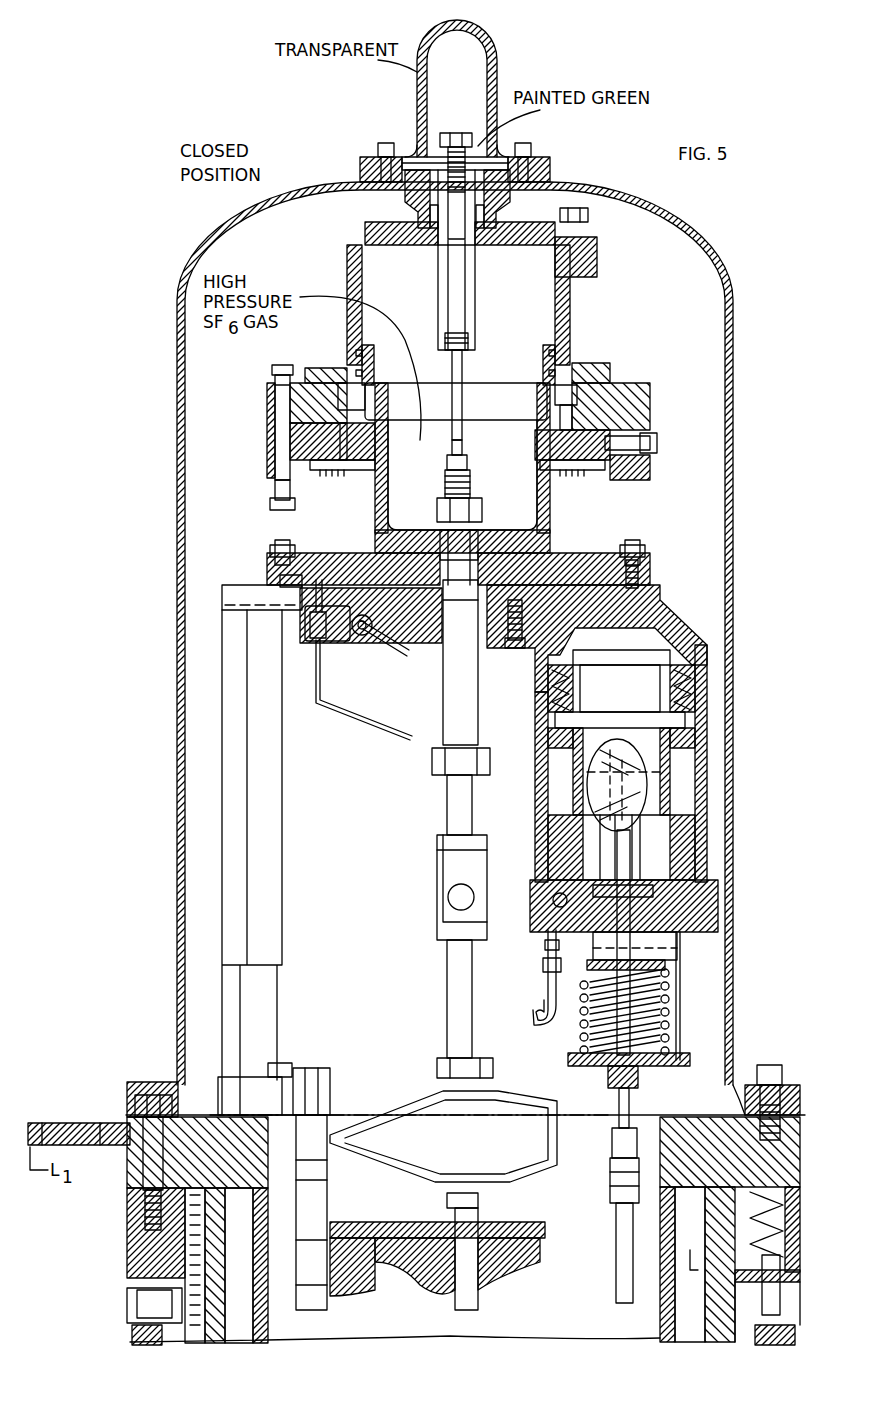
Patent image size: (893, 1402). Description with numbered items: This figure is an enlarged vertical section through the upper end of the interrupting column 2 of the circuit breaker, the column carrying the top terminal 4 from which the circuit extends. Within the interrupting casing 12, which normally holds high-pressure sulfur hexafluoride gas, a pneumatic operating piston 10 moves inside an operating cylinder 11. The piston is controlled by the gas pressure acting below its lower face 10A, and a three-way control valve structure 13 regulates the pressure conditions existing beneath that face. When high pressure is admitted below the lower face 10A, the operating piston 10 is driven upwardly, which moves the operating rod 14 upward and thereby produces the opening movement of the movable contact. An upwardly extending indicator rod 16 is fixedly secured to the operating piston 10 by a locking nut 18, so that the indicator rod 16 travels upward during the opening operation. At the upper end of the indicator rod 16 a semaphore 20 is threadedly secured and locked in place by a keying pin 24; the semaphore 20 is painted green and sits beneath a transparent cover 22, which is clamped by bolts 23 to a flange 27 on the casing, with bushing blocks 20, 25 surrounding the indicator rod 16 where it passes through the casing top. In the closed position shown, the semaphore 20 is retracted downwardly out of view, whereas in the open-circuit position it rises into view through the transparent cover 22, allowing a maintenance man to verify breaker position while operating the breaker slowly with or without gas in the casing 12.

The interrupting column 2 is at (805, 1340).
The top terminal 4 is at (68, 1123).
The operating piston 10 is at (385, 477).
The lower face 10A is at (393, 533).
The operating cylinder 11 is at (546, 358).
The interrupting casing 12 is at (690, 1250).
The three-way control valve structure 13 is at (682, 780).
The operating rod 14 is at (444, 805).
The indicator rod 16 is at (455, 288).
The locking nut 18 is at (477, 515).
The semaphore 20 is at (433, 187).
The transparent cover 22 is at (417, 96).
The flange bolts 23 is at (385, 148).
The keying pin 24 is at (452, 133).
The right bushing block 25 is at (504, 192).
The flange ring 27 is at (552, 173).